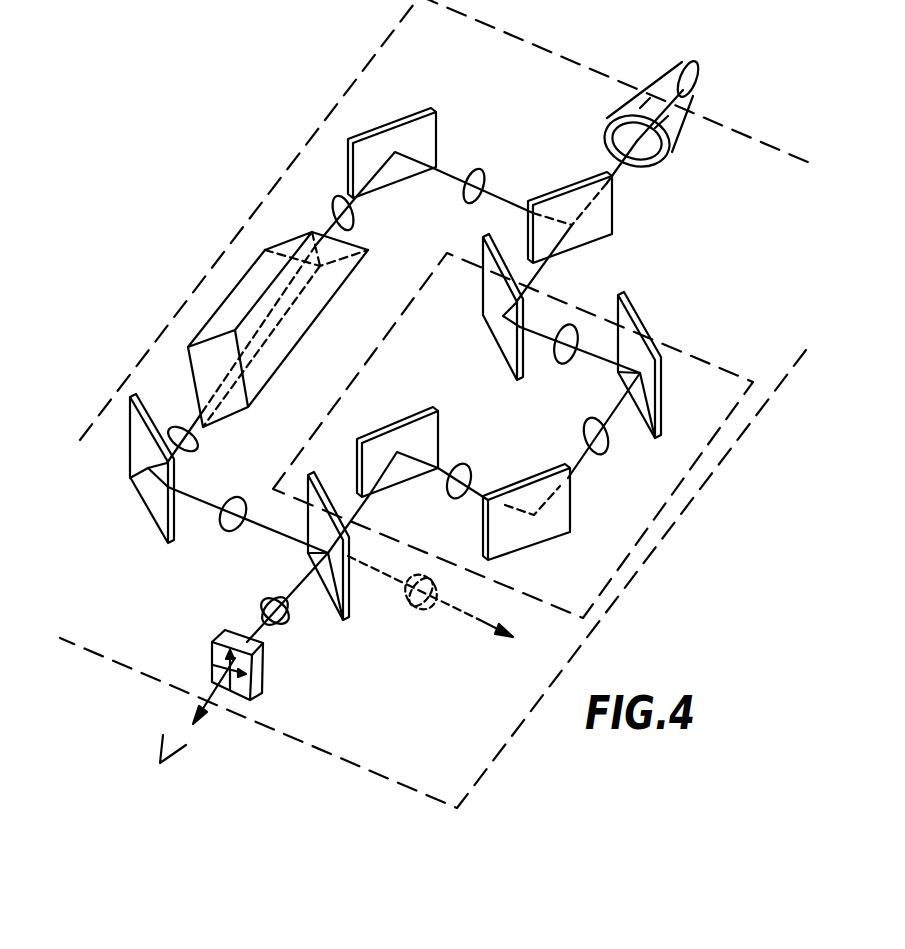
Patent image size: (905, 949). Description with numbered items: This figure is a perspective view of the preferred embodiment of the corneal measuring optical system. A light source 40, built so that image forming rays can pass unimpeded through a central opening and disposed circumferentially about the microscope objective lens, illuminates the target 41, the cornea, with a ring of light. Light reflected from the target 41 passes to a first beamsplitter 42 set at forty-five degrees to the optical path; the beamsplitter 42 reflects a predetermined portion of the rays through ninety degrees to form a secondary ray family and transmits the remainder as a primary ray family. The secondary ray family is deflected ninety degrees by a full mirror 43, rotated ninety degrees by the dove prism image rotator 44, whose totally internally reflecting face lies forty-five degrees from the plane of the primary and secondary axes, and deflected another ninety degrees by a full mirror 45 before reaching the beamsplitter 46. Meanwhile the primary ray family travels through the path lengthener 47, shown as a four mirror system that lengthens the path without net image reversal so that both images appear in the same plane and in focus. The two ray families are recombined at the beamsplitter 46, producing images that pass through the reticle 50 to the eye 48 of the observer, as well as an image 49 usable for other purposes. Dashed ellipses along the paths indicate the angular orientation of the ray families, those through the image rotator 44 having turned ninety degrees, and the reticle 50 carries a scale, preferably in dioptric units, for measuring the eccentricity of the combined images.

The light source 40 is at (668, 150).
The target 41 is at (702, 70).
The first beamsplitter 42 is at (613, 192).
The full mirror 43 is at (395, 120).
The image rotator 44 is at (253, 263).
The full mirror 45 is at (147, 510).
The beamsplitter 46 is at (343, 621).
The path lengthener 47 is at (683, 478).
The eye 48 is at (163, 735).
The image 49 is at (480, 624).
The reticle 50 is at (262, 662).